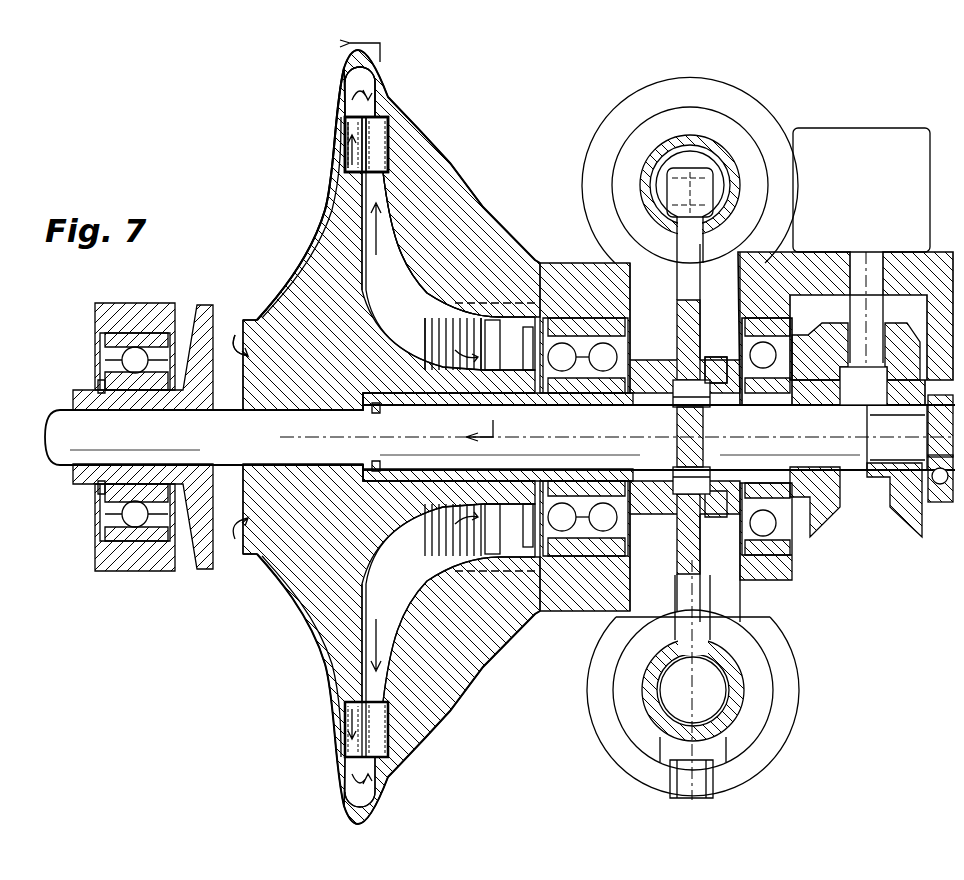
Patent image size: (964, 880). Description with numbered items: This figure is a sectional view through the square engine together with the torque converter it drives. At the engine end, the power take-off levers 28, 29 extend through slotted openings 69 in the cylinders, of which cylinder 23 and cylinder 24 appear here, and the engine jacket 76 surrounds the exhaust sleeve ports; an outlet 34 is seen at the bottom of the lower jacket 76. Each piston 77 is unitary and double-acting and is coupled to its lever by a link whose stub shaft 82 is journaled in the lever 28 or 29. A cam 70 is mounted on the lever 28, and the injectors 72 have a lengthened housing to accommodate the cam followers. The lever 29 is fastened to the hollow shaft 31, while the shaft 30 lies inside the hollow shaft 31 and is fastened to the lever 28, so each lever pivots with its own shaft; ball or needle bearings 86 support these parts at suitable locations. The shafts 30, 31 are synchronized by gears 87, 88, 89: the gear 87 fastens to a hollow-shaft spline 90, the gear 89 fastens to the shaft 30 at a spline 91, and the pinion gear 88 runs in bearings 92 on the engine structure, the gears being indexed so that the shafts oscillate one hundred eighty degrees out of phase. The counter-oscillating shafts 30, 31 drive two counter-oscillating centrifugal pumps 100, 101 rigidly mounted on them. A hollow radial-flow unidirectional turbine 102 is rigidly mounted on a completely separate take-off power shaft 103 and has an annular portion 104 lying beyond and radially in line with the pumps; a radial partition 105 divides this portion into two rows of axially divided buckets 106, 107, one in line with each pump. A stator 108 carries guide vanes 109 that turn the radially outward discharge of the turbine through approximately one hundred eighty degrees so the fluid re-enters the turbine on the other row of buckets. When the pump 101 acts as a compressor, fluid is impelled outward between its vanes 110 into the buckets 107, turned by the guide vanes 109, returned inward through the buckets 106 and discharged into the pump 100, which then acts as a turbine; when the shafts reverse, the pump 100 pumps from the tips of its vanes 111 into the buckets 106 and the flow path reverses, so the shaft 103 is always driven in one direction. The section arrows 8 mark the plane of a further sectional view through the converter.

The section line 8- 8 is at (409, 243).
The cylinder 23 is at (664, 331).
The cylinder 24 is at (655, 200).
The lever 28 is at (684, 436).
The lever 29 is at (732, 321).
The shaft 30 is at (566, 435).
The hollow shaft 31 is at (524, 412).
The outlet 34 is at (675, 780).
The slotted opening 69 is at (705, 228).
The cam 70 is at (702, 357).
The injector 72 is at (710, 602).
The engine jacket 76 is at (735, 135).
The piston 77 is at (712, 150).
The stub shaft 82 is at (725, 198).
The ball or needle bearing 86 is at (133, 521).
The gear 87 is at (825, 535).
The pinion gear 88 is at (840, 342).
The gear 89 is at (910, 537).
The hollow-shaft spline 90 is at (836, 493).
The spline 91 is at (895, 412).
The bearing 92 is at (876, 262).
The centrifugal pump 100 is at (350, 238).
The centrifugal pump 101 is at (375, 232).
The turbine 102 is at (333, 200).
The take-off power shaft 103 is at (160, 436).
The annular portion 104 is at (352, 150).
The radial partition 105 is at (366, 135).
The turbine bucket 106 is at (348, 135).
The turbine bucket 107 is at (381, 148).
The stator 108 is at (452, 162).
The guide vane 109 is at (372, 98).
The vane 110 is at (450, 312).
The vane 111 is at (262, 304).